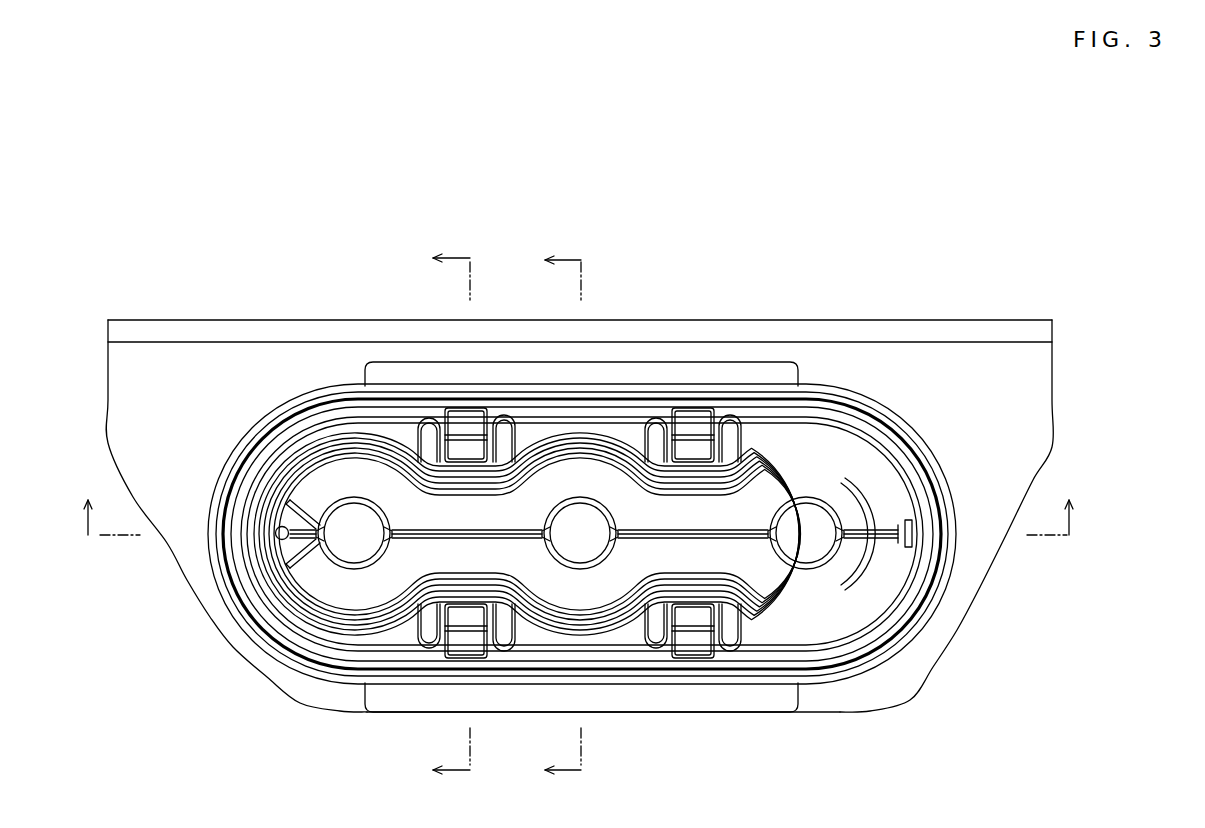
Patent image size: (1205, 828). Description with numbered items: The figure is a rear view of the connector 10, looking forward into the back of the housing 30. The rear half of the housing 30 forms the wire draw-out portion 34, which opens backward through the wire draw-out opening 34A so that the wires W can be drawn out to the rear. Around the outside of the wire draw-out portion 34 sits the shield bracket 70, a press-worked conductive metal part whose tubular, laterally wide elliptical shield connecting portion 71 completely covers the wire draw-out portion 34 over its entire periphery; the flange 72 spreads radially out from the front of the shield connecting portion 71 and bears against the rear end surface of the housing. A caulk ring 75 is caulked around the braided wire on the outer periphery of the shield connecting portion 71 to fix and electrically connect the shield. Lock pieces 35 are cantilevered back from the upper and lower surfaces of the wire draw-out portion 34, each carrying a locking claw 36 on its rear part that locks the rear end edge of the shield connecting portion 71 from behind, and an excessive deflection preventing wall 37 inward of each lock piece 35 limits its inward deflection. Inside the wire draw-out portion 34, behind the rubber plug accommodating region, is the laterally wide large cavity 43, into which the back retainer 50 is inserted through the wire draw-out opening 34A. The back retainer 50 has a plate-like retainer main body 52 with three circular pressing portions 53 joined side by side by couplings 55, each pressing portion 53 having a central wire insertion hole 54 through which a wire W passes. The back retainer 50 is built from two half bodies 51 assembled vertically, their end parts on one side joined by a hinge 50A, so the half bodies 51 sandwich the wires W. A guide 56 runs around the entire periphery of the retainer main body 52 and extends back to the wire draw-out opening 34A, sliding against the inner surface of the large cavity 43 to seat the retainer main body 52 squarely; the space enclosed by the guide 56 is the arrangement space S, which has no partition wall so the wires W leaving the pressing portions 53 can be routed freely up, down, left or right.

The connector 10 is at (835, 208).
The housing 30 is at (815, 657).
The wire draw-out portion 34 is at (755, 638).
The wire draw-out opening 34A is at (575, 604).
The lock piece 35 is at (426, 402).
The locking claw 36 is at (690, 420).
The excessive deflection preventing wall 37 is at (757, 478).
The large cavity 43 is at (880, 600).
The back retainer 50 is at (852, 618).
The hinge 50A is at (275, 533).
The half body 51 is at (833, 467).
The retainer main body 52 is at (540, 592).
The pressing portion 53 is at (347, 490).
The wire insertion hole 54 is at (568, 509).
The coupling 55 is at (700, 507).
The guide 56 is at (338, 483).
The shield bracket 70 is at (1010, 586).
The shield connecting portion 71 is at (917, 630).
The flange 72 is at (1030, 432).
The caulk ring 75 is at (262, 642).
The wire W is at (587, 530).
The arrangement space S is at (647, 557).